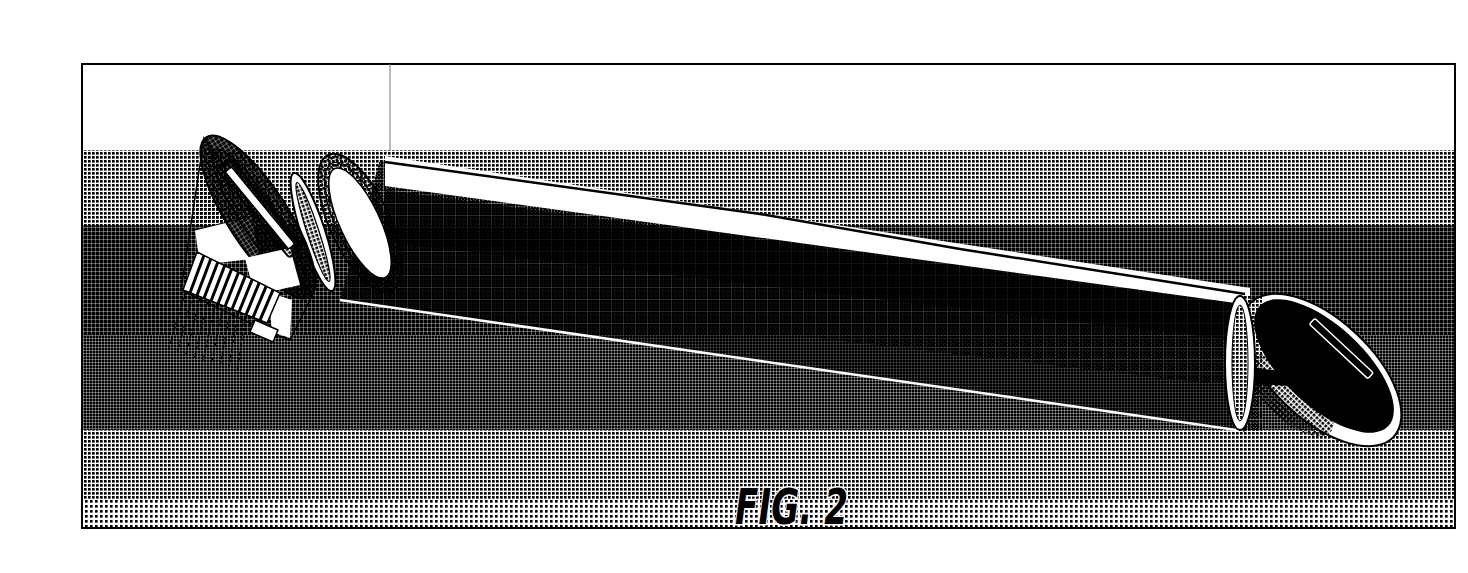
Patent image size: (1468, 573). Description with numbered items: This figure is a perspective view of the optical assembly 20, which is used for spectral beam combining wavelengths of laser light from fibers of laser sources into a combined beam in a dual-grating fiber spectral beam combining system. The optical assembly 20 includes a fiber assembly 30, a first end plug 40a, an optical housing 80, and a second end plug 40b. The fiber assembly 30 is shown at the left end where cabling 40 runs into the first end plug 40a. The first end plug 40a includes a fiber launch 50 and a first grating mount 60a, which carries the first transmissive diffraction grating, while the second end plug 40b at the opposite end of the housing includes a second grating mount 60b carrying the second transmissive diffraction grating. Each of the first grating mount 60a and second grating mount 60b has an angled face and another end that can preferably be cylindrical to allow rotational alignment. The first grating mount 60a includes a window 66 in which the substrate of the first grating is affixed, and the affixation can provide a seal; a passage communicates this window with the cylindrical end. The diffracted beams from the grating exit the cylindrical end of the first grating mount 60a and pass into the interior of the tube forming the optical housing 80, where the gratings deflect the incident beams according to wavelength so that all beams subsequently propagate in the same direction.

The optical assembly 20 is at (492, 70).
The fiber assembly 30 is at (172, 278).
The cable 40 is at (264, 326).
The first end plug 40a is at (163, 168).
The second end plug 40b is at (1356, 277).
The fiber launch 50 is at (196, 213).
The first grating mount 60a is at (237, 138).
The second grating mount 60b is at (1284, 292).
The window 66 is at (261, 188).
The optical housing 80 is at (822, 224).